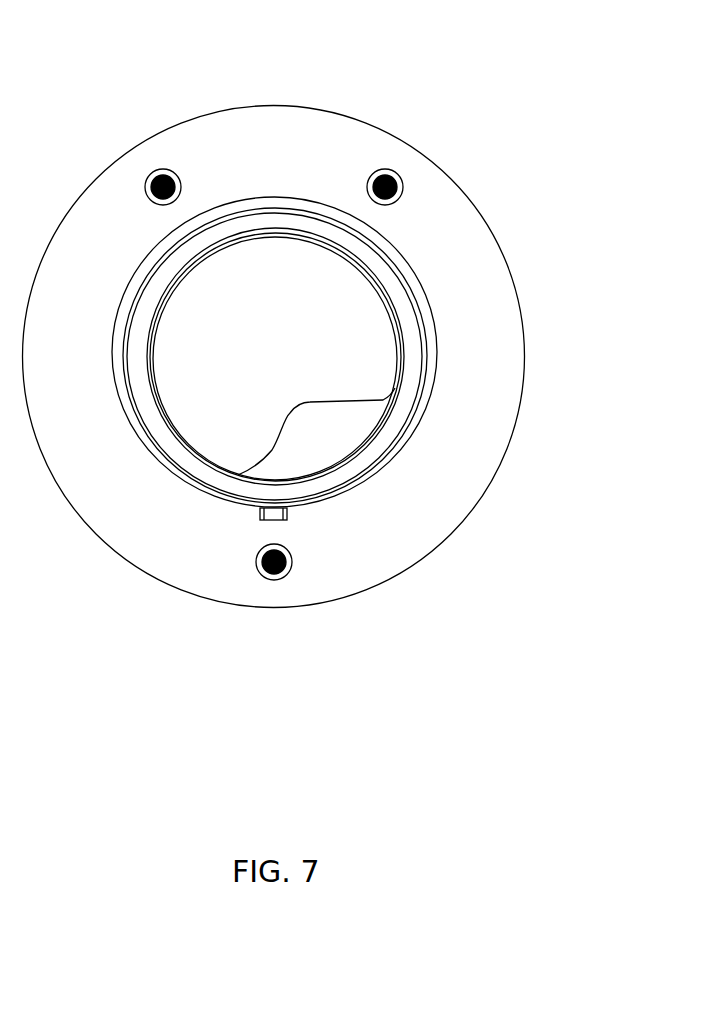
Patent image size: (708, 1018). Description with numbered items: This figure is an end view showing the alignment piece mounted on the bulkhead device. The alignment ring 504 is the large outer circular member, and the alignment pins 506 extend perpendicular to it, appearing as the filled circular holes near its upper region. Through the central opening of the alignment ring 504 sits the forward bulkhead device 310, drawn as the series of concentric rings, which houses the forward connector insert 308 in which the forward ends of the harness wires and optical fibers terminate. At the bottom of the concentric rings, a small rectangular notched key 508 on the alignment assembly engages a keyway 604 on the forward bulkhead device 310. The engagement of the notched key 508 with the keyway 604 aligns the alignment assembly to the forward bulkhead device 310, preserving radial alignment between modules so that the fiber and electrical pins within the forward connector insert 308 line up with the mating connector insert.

The forward connector insert 308 is at (344, 334).
The forward bulkhead device 310 is at (283, 432).
The alignment ring 504 is at (500, 433).
The alignment pins 506 is at (170, 170).
The notched key 508 is at (268, 522).
The keyway 604 is at (290, 513).